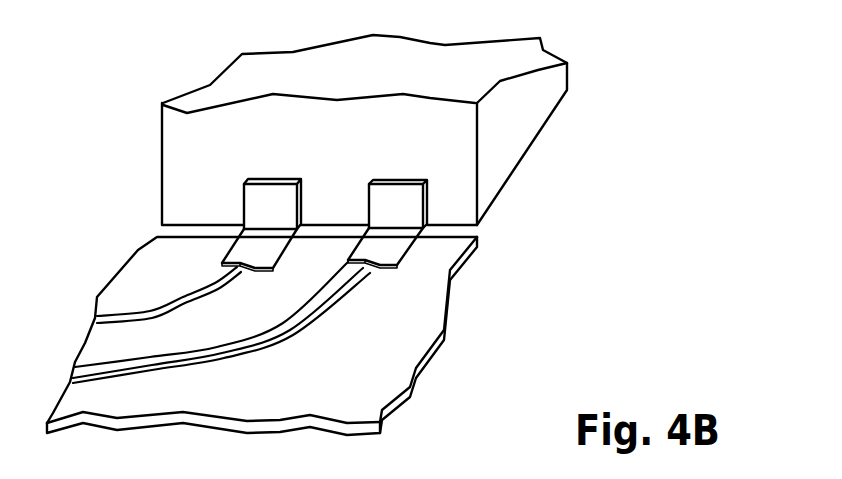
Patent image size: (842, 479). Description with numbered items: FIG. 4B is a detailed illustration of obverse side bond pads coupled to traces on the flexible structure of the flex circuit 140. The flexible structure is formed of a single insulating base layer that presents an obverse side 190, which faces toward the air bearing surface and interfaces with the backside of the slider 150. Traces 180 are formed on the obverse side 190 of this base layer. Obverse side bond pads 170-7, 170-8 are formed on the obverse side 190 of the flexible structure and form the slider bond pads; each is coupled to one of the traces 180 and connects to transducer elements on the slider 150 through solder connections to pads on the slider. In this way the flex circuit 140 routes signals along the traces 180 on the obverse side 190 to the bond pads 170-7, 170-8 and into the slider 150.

The slider 150 is at (355, 148).
The obverse side bond pad 170-8 is at (231, 260).
The obverse side bond pad 170-7 is at (387, 253).
The traces 180 is at (160, 313).
The obverse side 190 is at (410, 307).
The flex circuit 140 is at (397, 403).